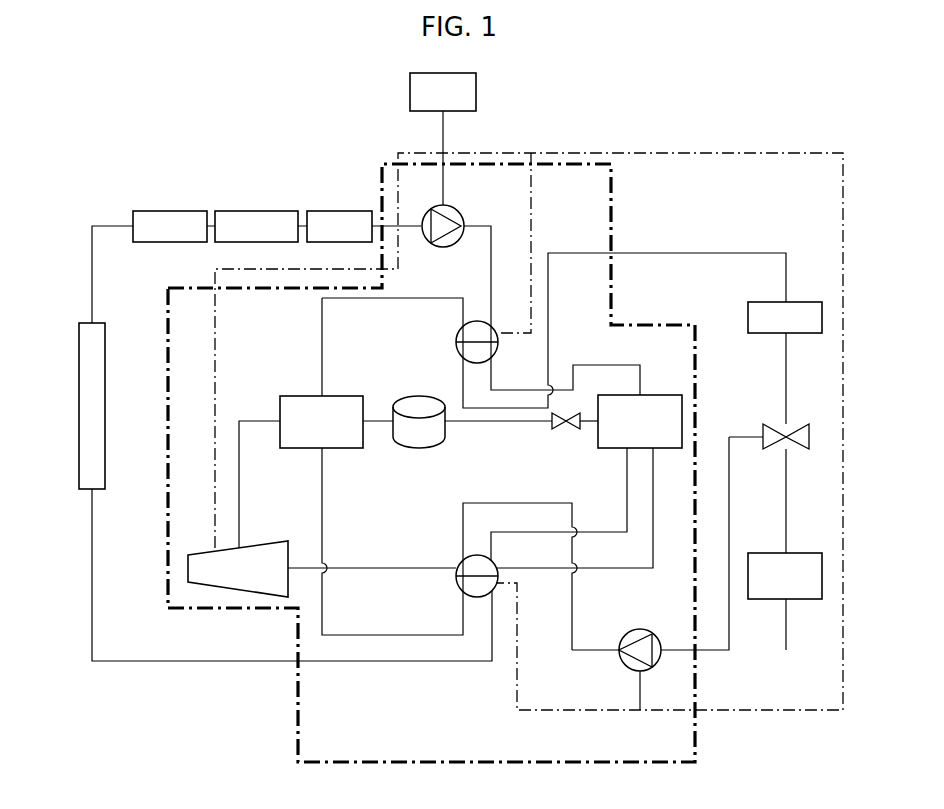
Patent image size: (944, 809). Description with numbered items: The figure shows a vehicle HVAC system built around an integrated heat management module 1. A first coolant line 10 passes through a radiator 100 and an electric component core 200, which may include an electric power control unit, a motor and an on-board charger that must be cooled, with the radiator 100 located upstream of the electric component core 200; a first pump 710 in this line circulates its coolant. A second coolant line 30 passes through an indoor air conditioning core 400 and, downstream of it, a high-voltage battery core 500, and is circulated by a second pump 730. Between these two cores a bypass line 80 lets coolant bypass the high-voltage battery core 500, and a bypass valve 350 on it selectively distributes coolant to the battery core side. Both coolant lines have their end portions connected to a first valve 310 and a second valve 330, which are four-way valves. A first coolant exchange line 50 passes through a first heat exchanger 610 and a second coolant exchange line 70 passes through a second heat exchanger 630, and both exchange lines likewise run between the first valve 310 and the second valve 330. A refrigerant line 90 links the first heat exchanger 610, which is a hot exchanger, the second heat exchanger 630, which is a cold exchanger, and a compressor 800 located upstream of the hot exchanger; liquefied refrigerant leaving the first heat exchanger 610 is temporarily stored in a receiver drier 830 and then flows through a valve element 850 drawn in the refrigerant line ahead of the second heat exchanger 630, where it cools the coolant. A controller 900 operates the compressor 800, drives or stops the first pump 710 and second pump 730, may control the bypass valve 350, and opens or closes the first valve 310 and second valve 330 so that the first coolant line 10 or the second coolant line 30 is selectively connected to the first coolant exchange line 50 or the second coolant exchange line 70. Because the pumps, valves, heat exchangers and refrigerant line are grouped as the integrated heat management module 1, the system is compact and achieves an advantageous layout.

The integrated heat management module 1 is at (168, 528).
The first coolant line 10 is at (268, 662).
The second coolant line 30 is at (662, 253).
The first coolant exchange line 50 is at (324, 485).
The second coolant exchange line 70 is at (653, 490).
The bypass line 80 is at (729, 590).
The refrigerant line 90 is at (481, 423).
The radiator 100 is at (100, 322).
The electric component core 200 is at (252, 188).
The first valve 310 is at (456, 342).
The second valve 330 is at (458, 583).
The bypass valve 350 is at (763, 426).
The indoor air conditioning core 400 is at (748, 312).
The high-voltage battery core 500 is at (802, 553).
The first heat exchanger 610 is at (293, 396).
The second heat exchanger 630 is at (660, 395).
The first pump 710 is at (455, 208).
The second pump 730 is at (623, 664).
The compressor 800 is at (218, 586).
The receiver drier 830 is at (421, 448).
The expansion valve 850 is at (549, 431).
The controller 900 is at (476, 90).